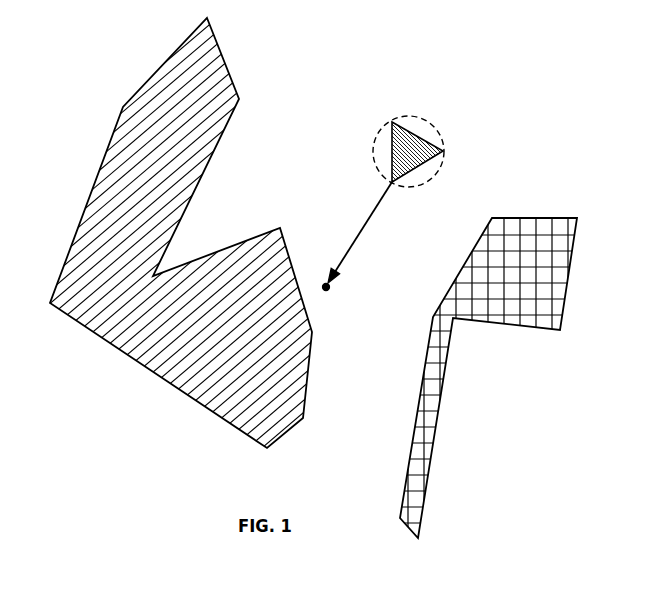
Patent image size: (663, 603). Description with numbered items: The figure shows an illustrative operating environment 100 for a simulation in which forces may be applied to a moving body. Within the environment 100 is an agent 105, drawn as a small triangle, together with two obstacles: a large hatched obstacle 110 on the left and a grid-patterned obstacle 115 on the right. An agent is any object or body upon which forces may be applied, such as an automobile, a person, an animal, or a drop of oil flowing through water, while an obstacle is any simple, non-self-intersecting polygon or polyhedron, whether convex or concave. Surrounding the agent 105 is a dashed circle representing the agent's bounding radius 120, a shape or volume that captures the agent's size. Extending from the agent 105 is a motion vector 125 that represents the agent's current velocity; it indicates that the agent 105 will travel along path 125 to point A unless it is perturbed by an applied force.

The environment 100 is at (93, 81).
The agent 105 is at (420, 130).
The obstacle 110 is at (185, 301).
The obstacle 115 is at (488, 377).
The bounding radius 120 is at (440, 168).
The motion vector 125 is at (367, 217).